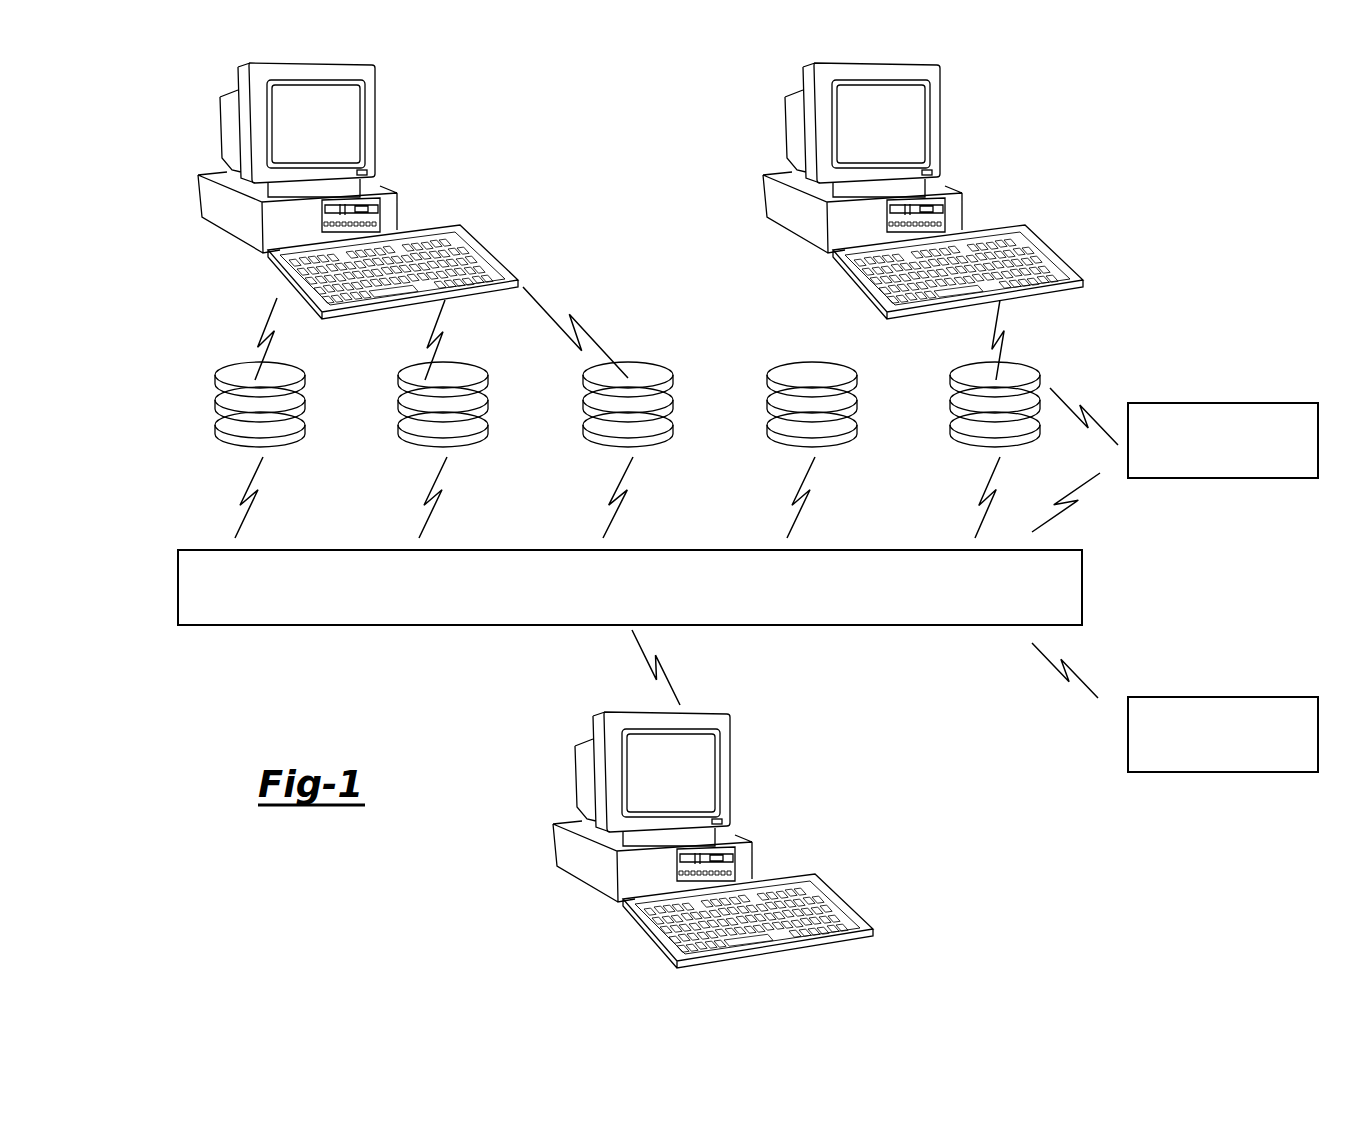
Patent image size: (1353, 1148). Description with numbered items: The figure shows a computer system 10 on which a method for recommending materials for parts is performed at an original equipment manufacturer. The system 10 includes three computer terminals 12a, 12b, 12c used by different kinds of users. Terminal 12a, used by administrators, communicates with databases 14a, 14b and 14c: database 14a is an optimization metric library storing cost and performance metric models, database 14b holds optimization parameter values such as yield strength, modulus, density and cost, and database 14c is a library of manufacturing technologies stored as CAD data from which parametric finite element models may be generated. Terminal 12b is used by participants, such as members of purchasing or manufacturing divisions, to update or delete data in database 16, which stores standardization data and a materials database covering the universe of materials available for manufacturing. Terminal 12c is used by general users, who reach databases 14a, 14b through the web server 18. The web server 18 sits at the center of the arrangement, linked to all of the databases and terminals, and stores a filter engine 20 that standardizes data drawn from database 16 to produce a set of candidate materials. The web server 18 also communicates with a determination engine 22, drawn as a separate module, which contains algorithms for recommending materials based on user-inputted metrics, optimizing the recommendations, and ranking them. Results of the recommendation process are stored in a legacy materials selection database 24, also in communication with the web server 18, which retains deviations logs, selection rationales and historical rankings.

The computer system 10 is at (1158, 195).
The computer terminal 12a is at (222, 117).
The computer terminal 12b is at (787, 117).
The computer terminal 12c is at (577, 766).
The database 14a is at (215, 401).
The database 14b is at (398, 401).
The database 14c is at (583, 405).
The database 16 is at (950, 405).
The web server 18 is at (178, 585).
The filter engine 20 is at (1223, 403).
The determination engine 22 is at (1223, 697).
The legacy materials selection database 24 is at (767, 405).